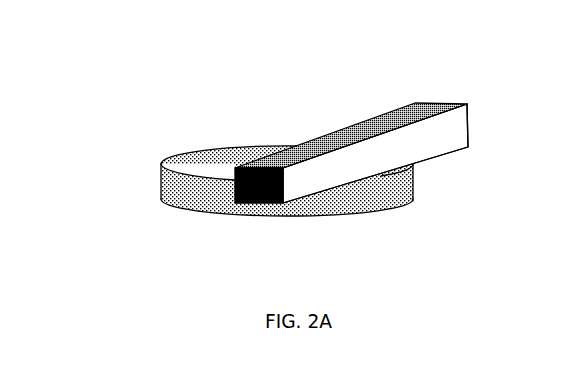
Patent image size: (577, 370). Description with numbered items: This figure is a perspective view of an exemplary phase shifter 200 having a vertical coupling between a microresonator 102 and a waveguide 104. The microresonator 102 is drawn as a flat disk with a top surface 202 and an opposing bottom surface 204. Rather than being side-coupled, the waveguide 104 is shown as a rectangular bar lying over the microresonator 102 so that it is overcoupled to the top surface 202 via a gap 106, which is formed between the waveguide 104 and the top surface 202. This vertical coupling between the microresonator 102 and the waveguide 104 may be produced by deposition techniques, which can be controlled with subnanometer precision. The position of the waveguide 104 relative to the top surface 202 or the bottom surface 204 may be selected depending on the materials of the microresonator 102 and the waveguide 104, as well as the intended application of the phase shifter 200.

The phase shifter 200 is at (240, 83).
The microresonator 102 is at (149, 182).
The top surface 202 is at (218, 170).
The bottom surface 204 is at (248, 215).
The waveguide 104 is at (442, 102).
The gap 106 is at (448, 158).